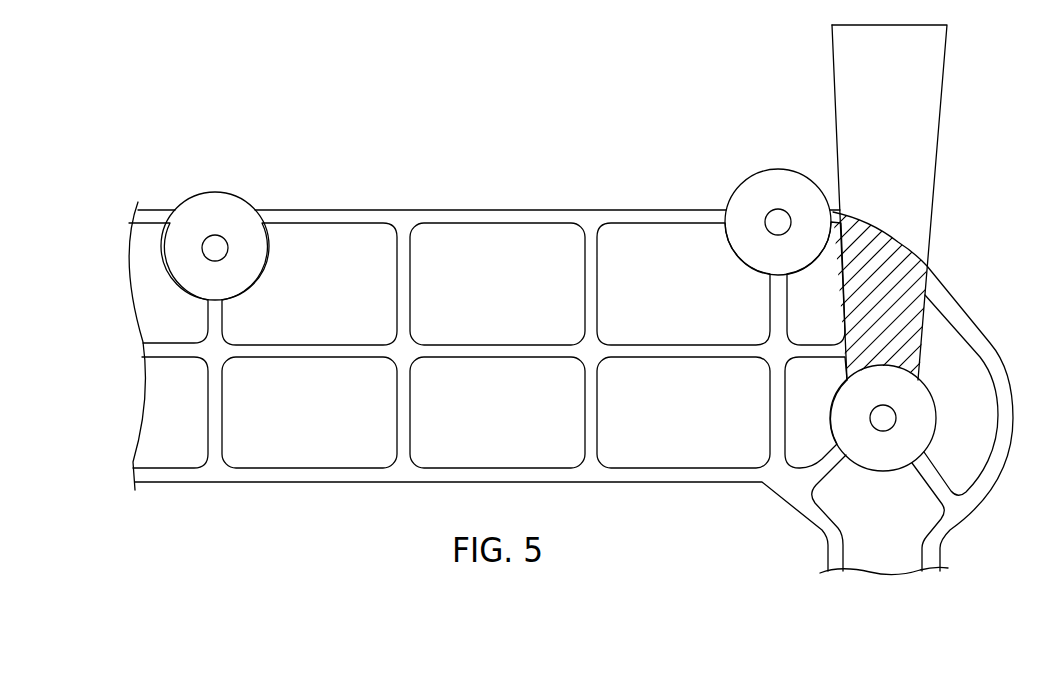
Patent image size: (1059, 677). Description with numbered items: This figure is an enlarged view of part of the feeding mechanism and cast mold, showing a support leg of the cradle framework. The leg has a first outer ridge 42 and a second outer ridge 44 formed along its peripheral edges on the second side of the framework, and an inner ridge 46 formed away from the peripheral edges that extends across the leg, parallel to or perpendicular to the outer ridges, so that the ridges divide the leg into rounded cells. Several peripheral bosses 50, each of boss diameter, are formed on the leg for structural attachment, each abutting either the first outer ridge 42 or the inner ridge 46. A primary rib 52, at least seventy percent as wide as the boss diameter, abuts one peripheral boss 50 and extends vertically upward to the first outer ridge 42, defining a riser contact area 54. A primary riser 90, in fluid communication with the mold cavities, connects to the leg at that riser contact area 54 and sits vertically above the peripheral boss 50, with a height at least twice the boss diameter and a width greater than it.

The first outer ridge 42 is at (335, 210).
The second outer ridge 44 is at (285, 482).
The inner ridge 46 is at (405, 283).
The peripheral boss 50 is at (206, 229).
The primary rib 52 is at (875, 314).
The riser contact area 54 is at (905, 244).
The primary riser 90 is at (875, 104).